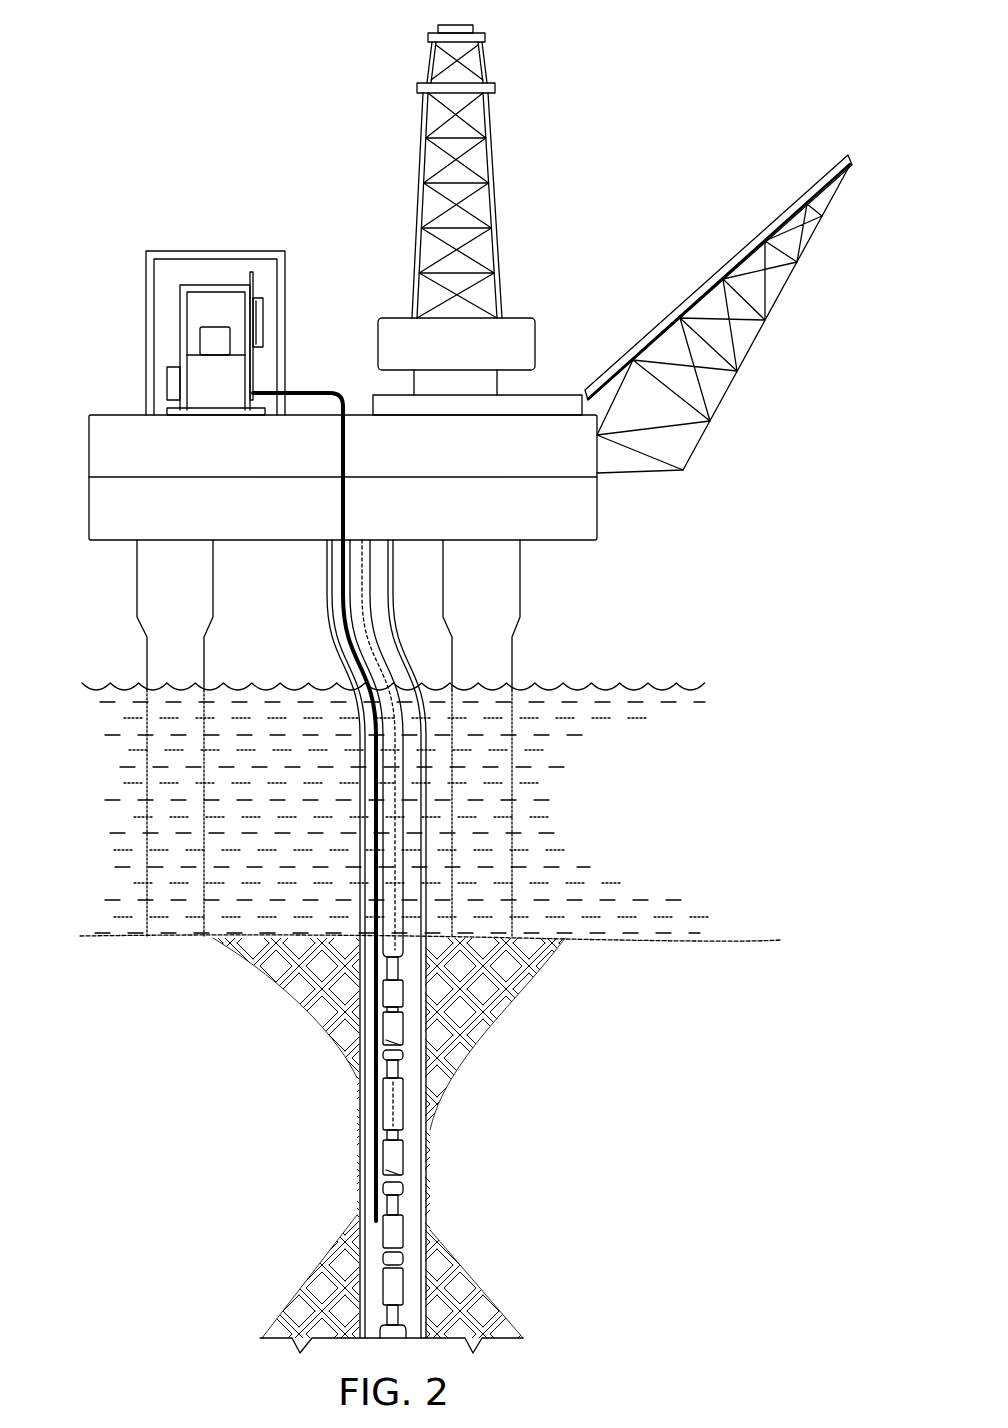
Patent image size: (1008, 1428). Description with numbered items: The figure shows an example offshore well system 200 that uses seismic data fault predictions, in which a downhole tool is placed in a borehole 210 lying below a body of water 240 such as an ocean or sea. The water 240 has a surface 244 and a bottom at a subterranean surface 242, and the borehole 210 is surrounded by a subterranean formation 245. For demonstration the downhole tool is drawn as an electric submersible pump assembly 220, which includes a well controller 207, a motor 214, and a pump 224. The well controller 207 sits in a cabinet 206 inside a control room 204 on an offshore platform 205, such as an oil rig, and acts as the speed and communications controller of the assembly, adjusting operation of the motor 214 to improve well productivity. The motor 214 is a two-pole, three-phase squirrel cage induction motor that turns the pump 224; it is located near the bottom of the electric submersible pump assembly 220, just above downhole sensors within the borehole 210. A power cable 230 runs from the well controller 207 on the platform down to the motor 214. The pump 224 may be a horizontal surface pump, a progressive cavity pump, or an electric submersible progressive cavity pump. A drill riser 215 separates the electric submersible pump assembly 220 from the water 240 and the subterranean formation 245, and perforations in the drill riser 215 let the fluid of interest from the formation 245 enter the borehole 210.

The offshore well system 200 is at (222, 106).
The control room 204 is at (199, 244).
The offshore platform 205 is at (606, 507).
The cabinet 206 is at (180, 318).
The well controller 207 is at (200, 343).
The borehole 210 is at (436, 1135).
The motor 214 is at (378, 1297).
The drill riser 215 is at (343, 655).
The electric submersible pump assembly 220 is at (380, 562).
The pump 224 is at (392, 1107).
The power cable 230 is at (341, 507).
The body of water 240 is at (612, 797).
The subterranean surface 242 is at (738, 937).
The water surface 244 is at (636, 690).
The subterranean formation 245 is at (214, 1067).